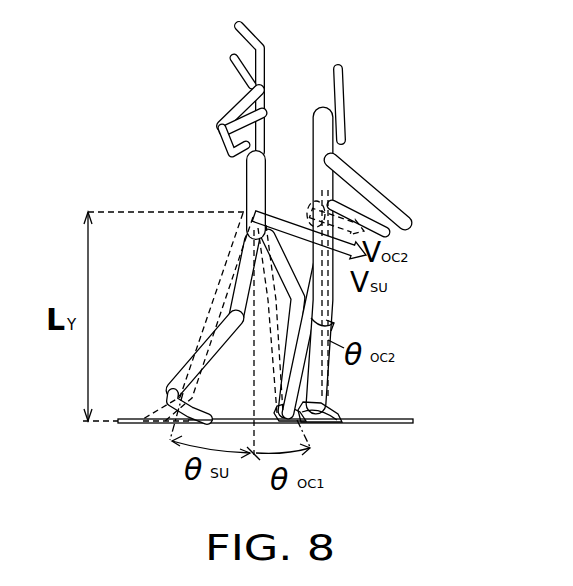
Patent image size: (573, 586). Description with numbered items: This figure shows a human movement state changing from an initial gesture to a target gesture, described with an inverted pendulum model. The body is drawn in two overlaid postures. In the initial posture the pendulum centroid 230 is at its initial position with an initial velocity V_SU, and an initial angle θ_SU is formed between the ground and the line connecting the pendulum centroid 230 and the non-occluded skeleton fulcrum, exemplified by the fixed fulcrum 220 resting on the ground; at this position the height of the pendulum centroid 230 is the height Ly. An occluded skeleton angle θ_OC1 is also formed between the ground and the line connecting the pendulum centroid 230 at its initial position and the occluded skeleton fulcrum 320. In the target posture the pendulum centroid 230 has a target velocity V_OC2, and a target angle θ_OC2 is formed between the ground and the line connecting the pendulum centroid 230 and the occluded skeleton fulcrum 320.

The fixed fulcrum 220 is at (152, 412).
The pendulum centroid 230 is at (252, 212).
The occluded skeleton fulcrum 320 is at (340, 427).